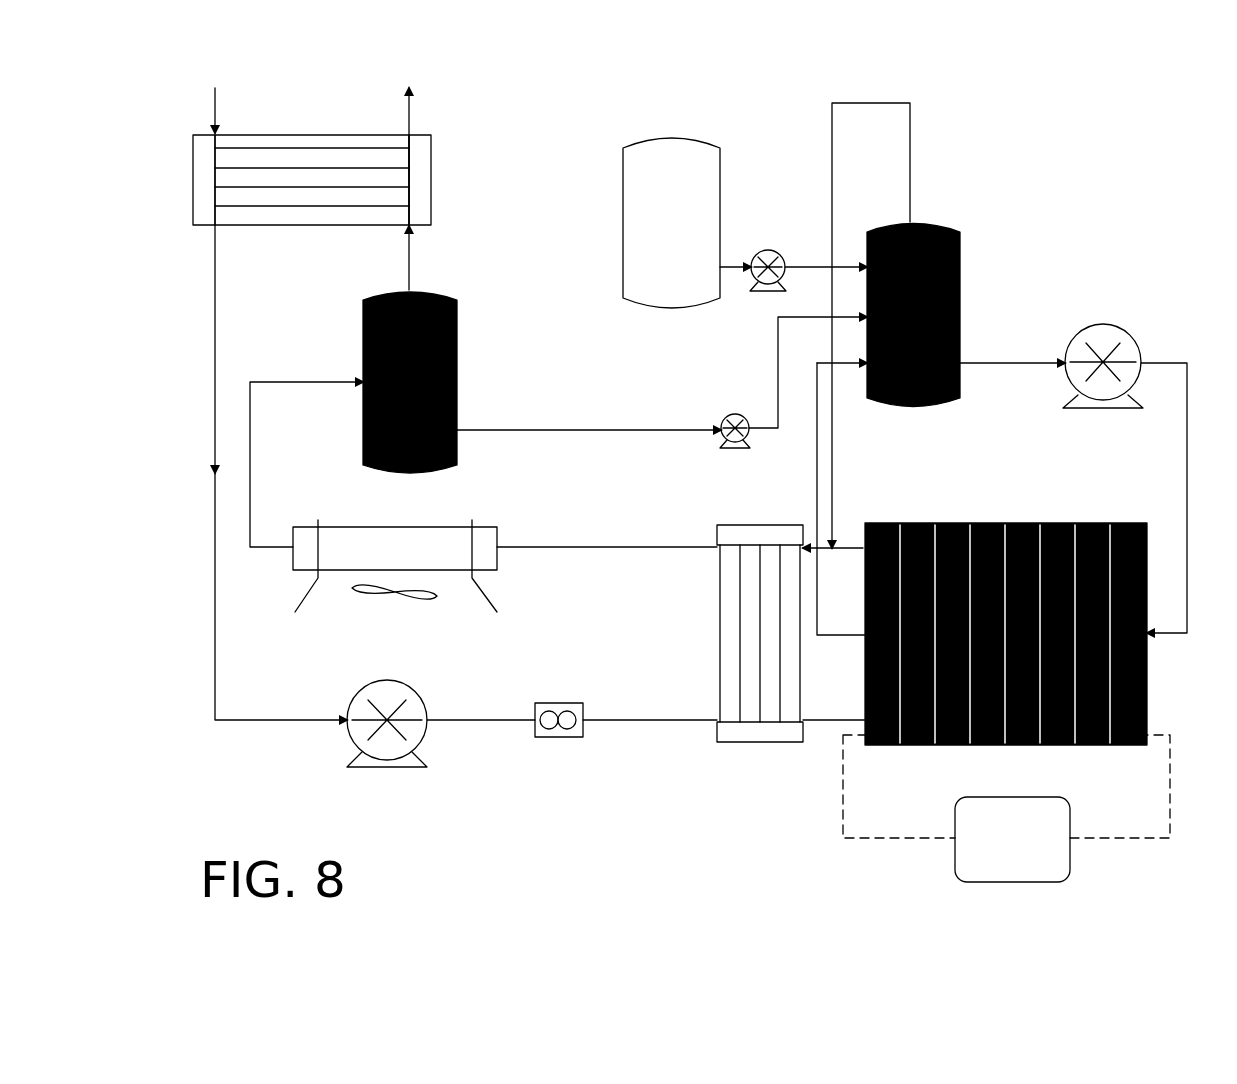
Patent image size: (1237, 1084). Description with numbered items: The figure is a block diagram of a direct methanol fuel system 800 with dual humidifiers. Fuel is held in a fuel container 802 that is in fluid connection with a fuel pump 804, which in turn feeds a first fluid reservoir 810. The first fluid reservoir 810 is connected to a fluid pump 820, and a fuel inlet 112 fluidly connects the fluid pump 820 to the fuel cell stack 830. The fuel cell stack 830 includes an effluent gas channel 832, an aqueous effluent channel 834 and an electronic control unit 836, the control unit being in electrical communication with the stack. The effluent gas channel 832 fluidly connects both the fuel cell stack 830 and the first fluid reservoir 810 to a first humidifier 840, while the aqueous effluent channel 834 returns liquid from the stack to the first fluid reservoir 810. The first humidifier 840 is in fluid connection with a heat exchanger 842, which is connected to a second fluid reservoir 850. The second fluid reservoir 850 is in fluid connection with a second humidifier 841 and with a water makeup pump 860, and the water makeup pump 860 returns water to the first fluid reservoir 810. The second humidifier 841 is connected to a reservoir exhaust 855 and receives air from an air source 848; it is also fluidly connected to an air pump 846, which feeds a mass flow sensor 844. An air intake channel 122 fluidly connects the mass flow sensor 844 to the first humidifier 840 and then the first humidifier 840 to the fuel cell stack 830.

The direct methanol fuel system 800 is at (1042, 266).
The fuel container 802 is at (721, 143).
The fuel pump 804 is at (756, 291).
The first fluid reservoir 810 is at (957, 226).
The fluid pump 820 is at (1112, 325).
The fuel cell stack 830 is at (1015, 523).
The effluent gas channel 832 is at (845, 548).
The aqueous effluent channel 834 is at (862, 637).
The electronic control unit 836 is at (955, 855).
The first humidifier 840 is at (717, 655).
The second humidifier 841 is at (313, 134).
The heat exchanger 842 is at (498, 527).
The mass flow sensor 844 is at (552, 703).
The air pump 846 is at (348, 737).
The air source 848 is at (216, 118).
The second fluid reservoir 850 is at (460, 296).
The reservoir exhaust 855 is at (411, 122).
The water makeup pump 860 is at (738, 413).
The fuel inlet 112 is at (1172, 636).
The air intake channel 122 is at (667, 723).